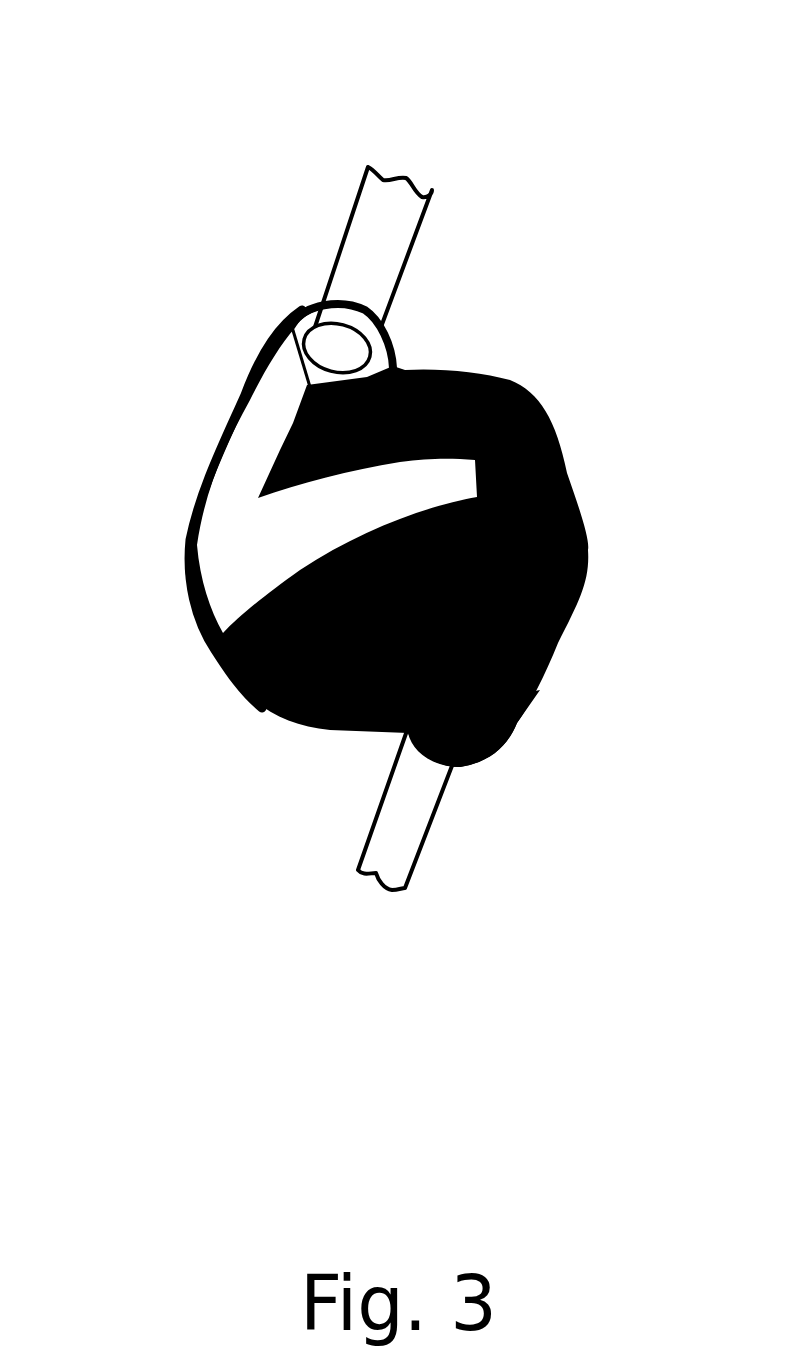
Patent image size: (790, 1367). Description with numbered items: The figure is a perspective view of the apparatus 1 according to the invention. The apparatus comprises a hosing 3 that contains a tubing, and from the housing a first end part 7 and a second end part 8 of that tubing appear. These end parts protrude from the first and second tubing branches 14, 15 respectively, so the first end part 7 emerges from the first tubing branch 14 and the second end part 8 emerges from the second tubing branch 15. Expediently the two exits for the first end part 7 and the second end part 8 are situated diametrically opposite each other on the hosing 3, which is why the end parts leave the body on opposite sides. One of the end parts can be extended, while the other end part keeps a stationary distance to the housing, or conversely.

The heat exchanger assembly 1 is at (172, 181).
The hosing 3 is at (222, 673).
The first end part 7 is at (377, 273).
The second end part 8 is at (403, 808).
The first tubing branch 14 is at (518, 723).
The second tubing branch 15 is at (262, 428).